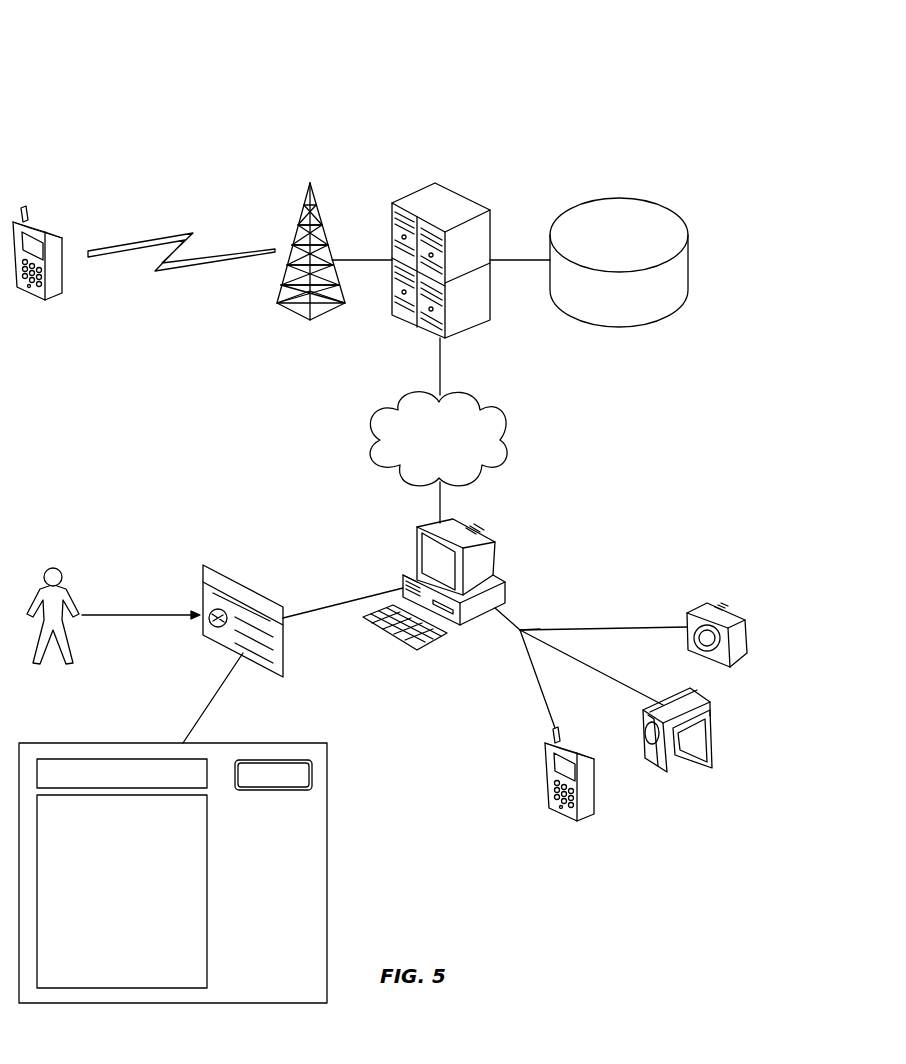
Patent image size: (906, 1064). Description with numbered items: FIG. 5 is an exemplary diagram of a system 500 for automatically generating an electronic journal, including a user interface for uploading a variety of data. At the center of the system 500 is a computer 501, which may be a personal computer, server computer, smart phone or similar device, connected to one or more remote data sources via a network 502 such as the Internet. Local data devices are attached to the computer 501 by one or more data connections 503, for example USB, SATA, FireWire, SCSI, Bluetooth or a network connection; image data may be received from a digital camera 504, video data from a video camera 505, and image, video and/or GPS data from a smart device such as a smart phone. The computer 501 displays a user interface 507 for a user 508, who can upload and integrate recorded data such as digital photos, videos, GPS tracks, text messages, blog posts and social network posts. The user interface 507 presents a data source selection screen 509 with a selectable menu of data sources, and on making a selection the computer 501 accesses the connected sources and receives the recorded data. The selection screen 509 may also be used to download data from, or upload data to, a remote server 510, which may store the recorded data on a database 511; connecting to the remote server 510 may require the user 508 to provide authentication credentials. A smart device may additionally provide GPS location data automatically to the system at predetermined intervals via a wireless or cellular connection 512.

The system 500 is at (118, 49).
The computer 501 is at (493, 556).
The network 502 is at (508, 443).
The data connections 503 is at (523, 630).
The digital camera 504 is at (748, 638).
The video camera 505 is at (717, 753).
The user interface 507 is at (200, 573).
The user 508 is at (55, 565).
The data source selection screen 509 is at (327, 856).
The remote server 510 is at (420, 191).
The database 511 is at (620, 198).
The wireless or cellular connection 512 is at (295, 302).